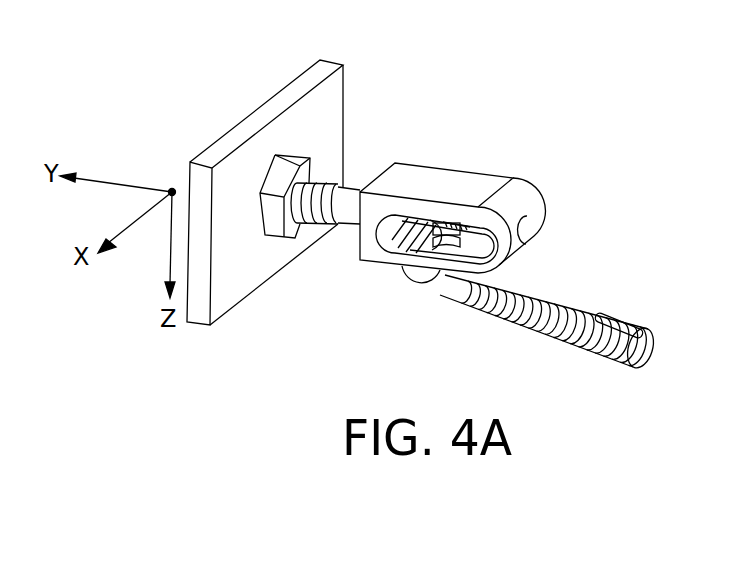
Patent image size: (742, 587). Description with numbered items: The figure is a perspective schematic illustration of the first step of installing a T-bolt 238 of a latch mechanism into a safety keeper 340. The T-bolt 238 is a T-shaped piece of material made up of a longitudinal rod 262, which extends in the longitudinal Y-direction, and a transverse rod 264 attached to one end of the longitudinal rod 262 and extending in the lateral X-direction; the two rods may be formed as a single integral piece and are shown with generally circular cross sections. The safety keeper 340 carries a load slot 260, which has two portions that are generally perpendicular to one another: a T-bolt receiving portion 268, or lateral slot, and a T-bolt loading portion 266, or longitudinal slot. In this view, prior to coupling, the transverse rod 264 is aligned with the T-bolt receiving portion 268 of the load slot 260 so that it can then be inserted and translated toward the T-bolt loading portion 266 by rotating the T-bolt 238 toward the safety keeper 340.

The T-bolt 238 is at (580, 297).
The load slot 260 is at (392, 250).
The longitudinal rod 262 is at (637, 327).
The transverse rod 264 is at (427, 290).
The T-bolt loading portion 266 is at (455, 223).
The T-bolt receiving portion 268 is at (428, 235).
The safety keeper 340 is at (452, 182).